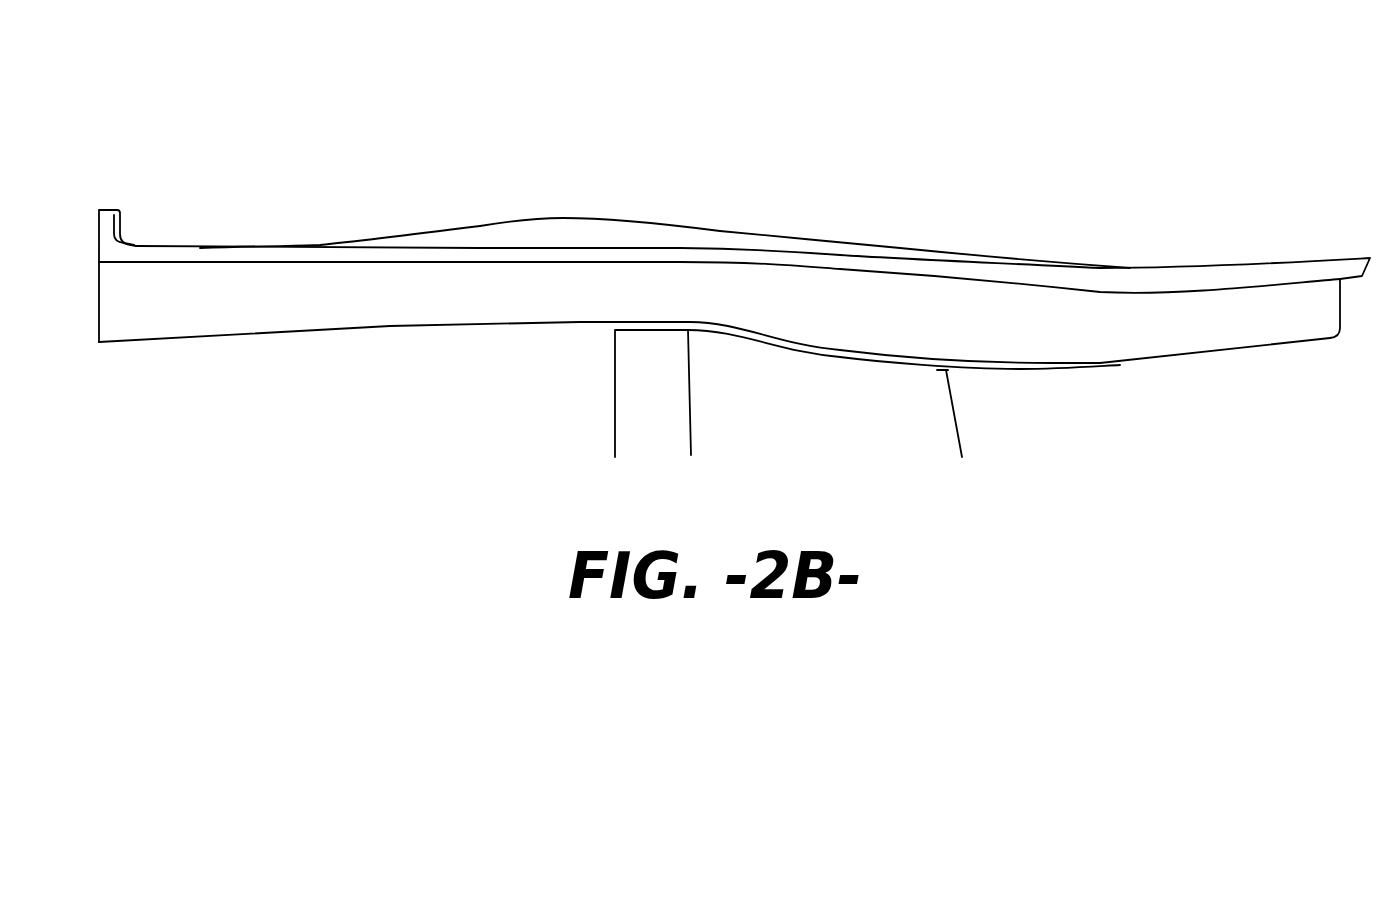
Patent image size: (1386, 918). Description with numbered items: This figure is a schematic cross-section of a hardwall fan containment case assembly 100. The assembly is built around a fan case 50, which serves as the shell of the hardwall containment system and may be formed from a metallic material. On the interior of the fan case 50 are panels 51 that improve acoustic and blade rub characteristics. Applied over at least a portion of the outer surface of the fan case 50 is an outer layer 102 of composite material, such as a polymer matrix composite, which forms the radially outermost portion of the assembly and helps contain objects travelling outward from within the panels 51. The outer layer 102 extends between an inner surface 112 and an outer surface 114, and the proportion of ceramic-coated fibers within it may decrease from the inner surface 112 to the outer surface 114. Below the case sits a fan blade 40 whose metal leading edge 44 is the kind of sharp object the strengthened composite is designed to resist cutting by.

The hardwall fan containment case assembly 100 is at (231, 129).
The fan case 50 is at (870, 267).
The panels 51 is at (352, 283).
The inner surface 112 is at (513, 250).
The outer surface 114 is at (647, 223).
The outer layer 102 is at (757, 243).
The metal leading edge 44 is at (630, 393).
The fan blade 40 is at (932, 420).